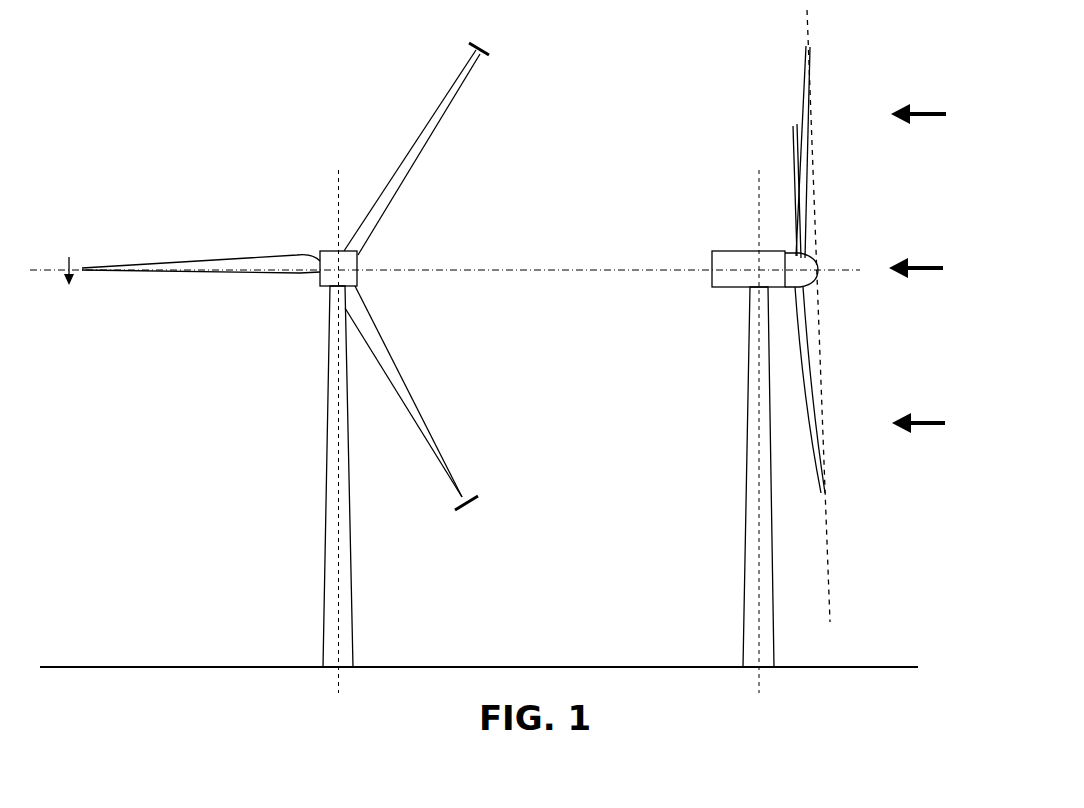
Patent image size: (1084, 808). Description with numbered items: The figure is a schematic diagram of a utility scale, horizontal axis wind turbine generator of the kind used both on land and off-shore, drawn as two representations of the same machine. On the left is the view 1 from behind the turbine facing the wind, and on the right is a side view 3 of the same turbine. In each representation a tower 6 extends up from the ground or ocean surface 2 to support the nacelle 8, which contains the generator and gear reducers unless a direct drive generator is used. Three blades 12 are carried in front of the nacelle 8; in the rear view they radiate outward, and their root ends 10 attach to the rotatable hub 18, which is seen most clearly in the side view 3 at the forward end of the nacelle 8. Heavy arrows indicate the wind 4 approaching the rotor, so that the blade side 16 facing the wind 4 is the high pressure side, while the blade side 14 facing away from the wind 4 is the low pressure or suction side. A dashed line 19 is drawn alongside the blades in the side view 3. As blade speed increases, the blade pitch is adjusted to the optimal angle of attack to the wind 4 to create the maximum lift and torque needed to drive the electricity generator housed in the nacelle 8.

The view from behind the turbine 1 is at (247, 146).
The ground or ocean surface 2 is at (197, 665).
The wind turbine 3 is at (694, 157).
The wind 4 is at (935, 118).
The tower 6 is at (330, 460).
The nacelle 8 is at (330, 260).
The blade root ends 10 is at (318, 272).
The rotor blade 12 is at (480, 55).
The low pressure side 14 is at (392, 348).
The high pressure side 16 is at (813, 355).
The rotatable hub 18 is at (812, 270).
The rotor plane 19 is at (828, 560).